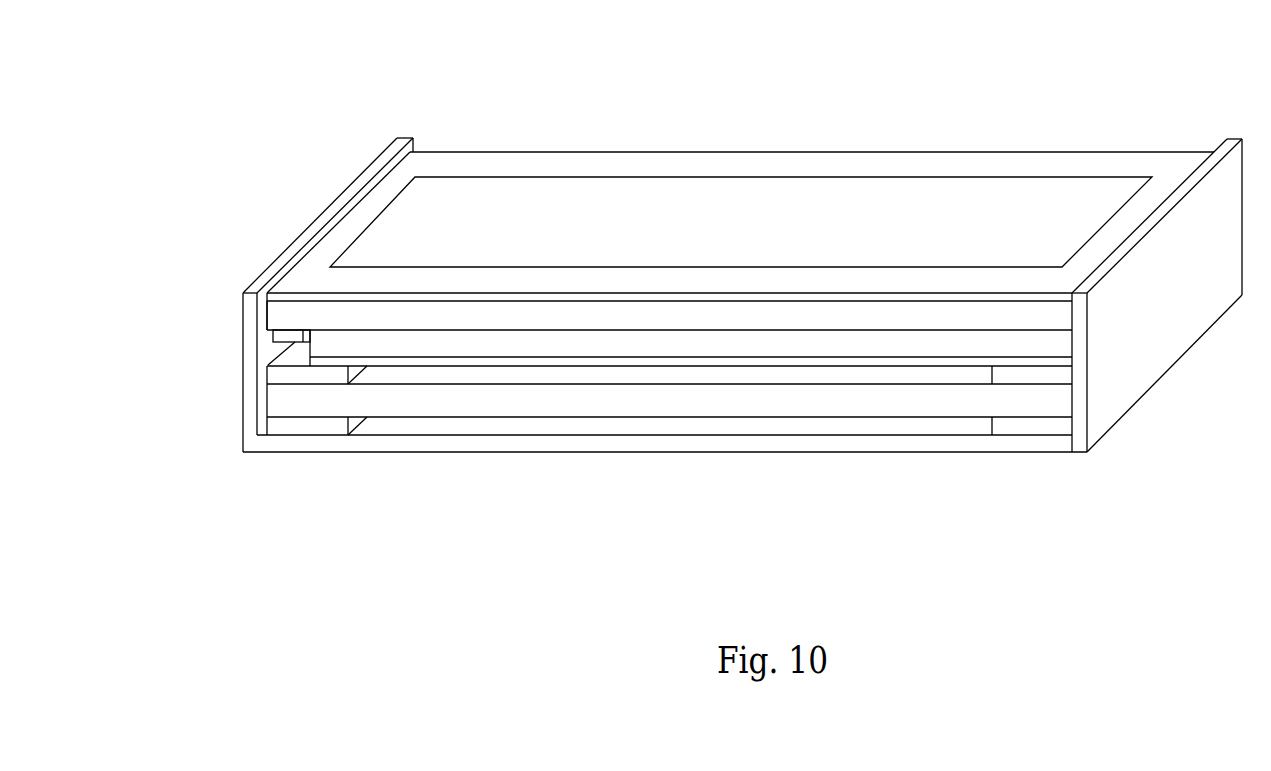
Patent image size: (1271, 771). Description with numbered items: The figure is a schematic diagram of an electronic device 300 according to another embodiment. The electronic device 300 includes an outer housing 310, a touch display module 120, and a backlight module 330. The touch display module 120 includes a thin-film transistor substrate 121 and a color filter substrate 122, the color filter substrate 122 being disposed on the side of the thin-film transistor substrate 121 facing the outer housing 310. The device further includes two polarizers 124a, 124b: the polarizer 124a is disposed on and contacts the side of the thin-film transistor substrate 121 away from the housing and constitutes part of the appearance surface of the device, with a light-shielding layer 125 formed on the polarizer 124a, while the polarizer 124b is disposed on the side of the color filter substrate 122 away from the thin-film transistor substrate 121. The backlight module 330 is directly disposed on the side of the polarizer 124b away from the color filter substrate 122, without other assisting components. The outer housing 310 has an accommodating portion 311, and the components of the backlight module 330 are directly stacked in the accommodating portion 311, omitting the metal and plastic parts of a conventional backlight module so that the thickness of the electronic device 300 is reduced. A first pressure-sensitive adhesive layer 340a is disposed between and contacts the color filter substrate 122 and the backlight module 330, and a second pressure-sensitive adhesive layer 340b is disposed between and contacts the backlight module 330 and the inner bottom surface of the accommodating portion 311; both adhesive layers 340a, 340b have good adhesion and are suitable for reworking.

The electronic device 300 is at (178, 48).
The outer housing 310 is at (243, 301).
The accommodating portion 311 is at (256, 354).
The touch display module 120 is at (1047, 112).
The thin-film transistor substrate 121 is at (1068, 313).
The color filter substrate 122 is at (322, 334).
The polarizer 124a is at (778, 187).
The polarizer 124b is at (1068, 360).
The light-shielding layer 125 is at (723, 163).
The backlight module 330 is at (273, 397).
The first pressure-sensitive adhesive layer 340a is at (273, 372).
The second pressure-sensitive adhesive layer 340b is at (273, 422).